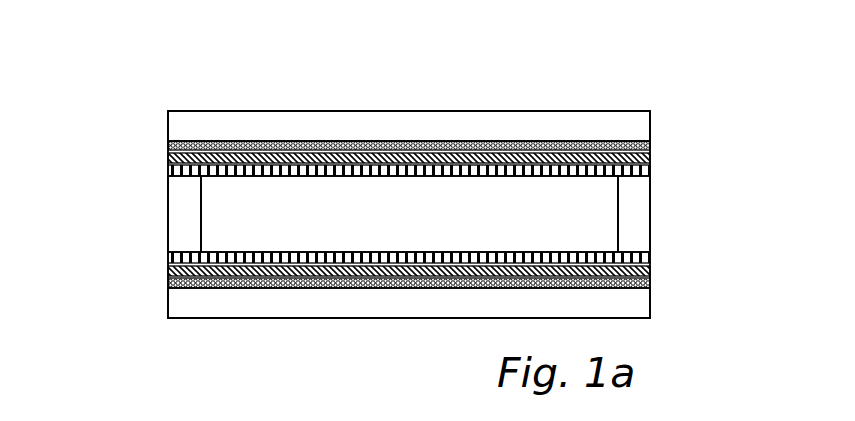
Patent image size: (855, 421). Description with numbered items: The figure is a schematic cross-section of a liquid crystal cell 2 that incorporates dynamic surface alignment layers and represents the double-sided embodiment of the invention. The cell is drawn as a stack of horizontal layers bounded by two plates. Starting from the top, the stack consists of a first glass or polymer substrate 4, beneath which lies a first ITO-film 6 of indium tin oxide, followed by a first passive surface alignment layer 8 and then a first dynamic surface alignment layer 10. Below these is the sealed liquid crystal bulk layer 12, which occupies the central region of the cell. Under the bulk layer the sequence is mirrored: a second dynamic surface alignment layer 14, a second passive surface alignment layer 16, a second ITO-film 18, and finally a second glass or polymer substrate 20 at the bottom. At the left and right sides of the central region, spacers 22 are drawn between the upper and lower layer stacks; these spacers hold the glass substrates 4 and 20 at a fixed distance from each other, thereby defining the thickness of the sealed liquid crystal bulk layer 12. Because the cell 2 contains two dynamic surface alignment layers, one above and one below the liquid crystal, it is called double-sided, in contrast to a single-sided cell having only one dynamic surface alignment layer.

The liquid crystal cell 2 is at (530, 98).
The first glass or polymer substrate 4 is at (303, 125).
The first ITO-film 6 is at (650, 145).
The first passive surface alignment layer 8 is at (650, 160).
The first dynamic surface alignment layer 10 is at (650, 170).
The sealed liquid crystal bulk layer 12 is at (603, 223).
The second dynamic surface alignment layer 14 is at (168, 258).
The second passive surface alignment layer 16 is at (168, 277).
The second ITO-film 18 is at (168, 285).
The second glass or polymer substrate 20 is at (187, 313).
The spacers 22 is at (168, 213).